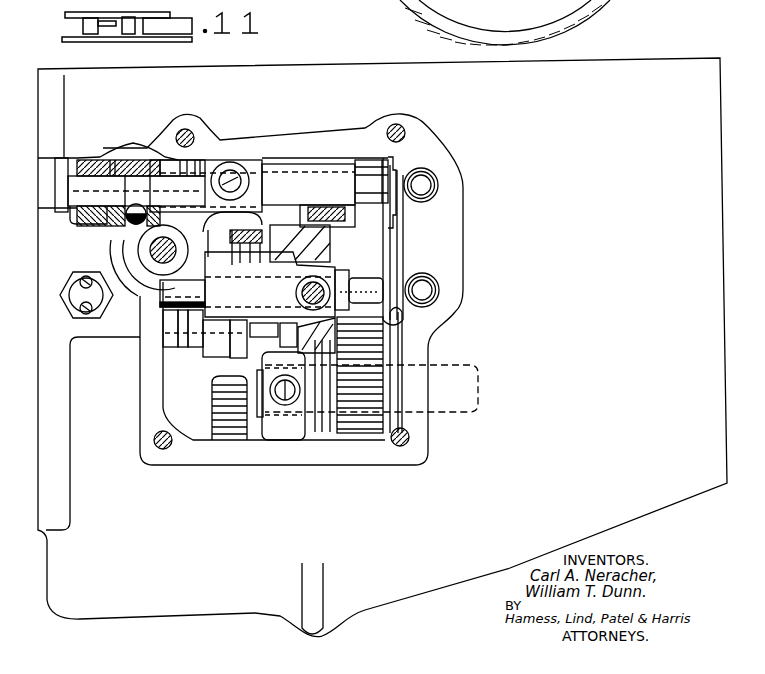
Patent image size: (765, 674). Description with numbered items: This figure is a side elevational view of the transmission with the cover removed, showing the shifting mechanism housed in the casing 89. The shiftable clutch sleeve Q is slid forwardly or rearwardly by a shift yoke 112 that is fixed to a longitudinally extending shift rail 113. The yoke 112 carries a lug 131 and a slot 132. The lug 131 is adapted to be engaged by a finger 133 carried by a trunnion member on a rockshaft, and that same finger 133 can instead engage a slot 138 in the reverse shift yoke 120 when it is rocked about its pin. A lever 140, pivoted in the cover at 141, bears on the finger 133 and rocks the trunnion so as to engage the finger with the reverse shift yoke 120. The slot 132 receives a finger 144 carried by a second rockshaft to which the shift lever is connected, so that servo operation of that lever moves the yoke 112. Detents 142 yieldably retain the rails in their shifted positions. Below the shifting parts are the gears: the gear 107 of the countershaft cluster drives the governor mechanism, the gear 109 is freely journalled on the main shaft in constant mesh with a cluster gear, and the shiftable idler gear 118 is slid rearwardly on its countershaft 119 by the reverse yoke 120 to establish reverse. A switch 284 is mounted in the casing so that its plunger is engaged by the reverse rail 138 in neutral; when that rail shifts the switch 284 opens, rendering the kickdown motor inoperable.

The housing 89 is at (623, 68).
The shift rail 113 is at (95, 178).
The lever 140 is at (250, 216).
The shift yoke 112 is at (327, 175).
The lug 131 is at (205, 207).
The slot 132 is at (308, 207).
The finger 144 is at (312, 213).
The finger 133 is at (252, 234).
The detents 142 is at (128, 220).
The pivot 141 is at (150, 252).
The slot 138 is at (342, 280).
The reverse shift yoke 120 is at (215, 290).
The gear 109 is at (289, 323).
The shiftable clutch sleeve Q is at (204, 360).
The gear 107 is at (213, 401).
The shiftable idler gear 118 is at (362, 434).
The countershaft 119 is at (455, 364).
The switch 284 is at (97, 317).